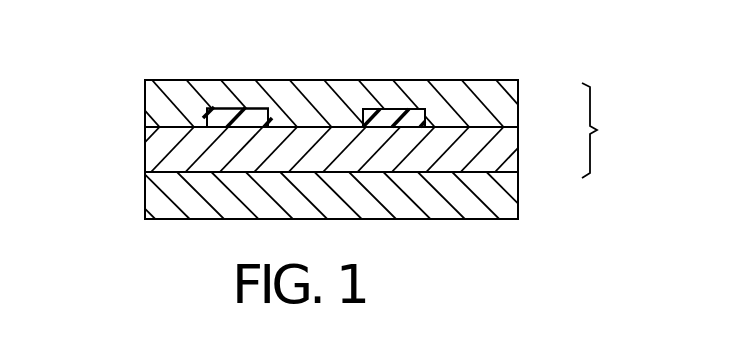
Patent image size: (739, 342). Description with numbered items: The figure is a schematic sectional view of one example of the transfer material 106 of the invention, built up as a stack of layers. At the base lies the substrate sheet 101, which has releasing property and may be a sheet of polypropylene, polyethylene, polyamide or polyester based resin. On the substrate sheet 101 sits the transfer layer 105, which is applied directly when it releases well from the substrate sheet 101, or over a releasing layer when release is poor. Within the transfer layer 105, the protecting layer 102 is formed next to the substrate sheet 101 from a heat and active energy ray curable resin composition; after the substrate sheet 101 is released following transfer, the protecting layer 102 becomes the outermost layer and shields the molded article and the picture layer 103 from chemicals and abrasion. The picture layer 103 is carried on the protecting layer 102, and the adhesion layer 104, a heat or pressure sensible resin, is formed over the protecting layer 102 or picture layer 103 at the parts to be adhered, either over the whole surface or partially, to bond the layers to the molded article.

The substrate sheet 101 is at (161, 194).
The protecting layer 102 is at (162, 147).
The picture layer 103 is at (393, 108).
The adhesion layer 104 is at (157, 101).
The transfer layer 105 is at (617, 130).
The transfer material 106 is at (282, 64).